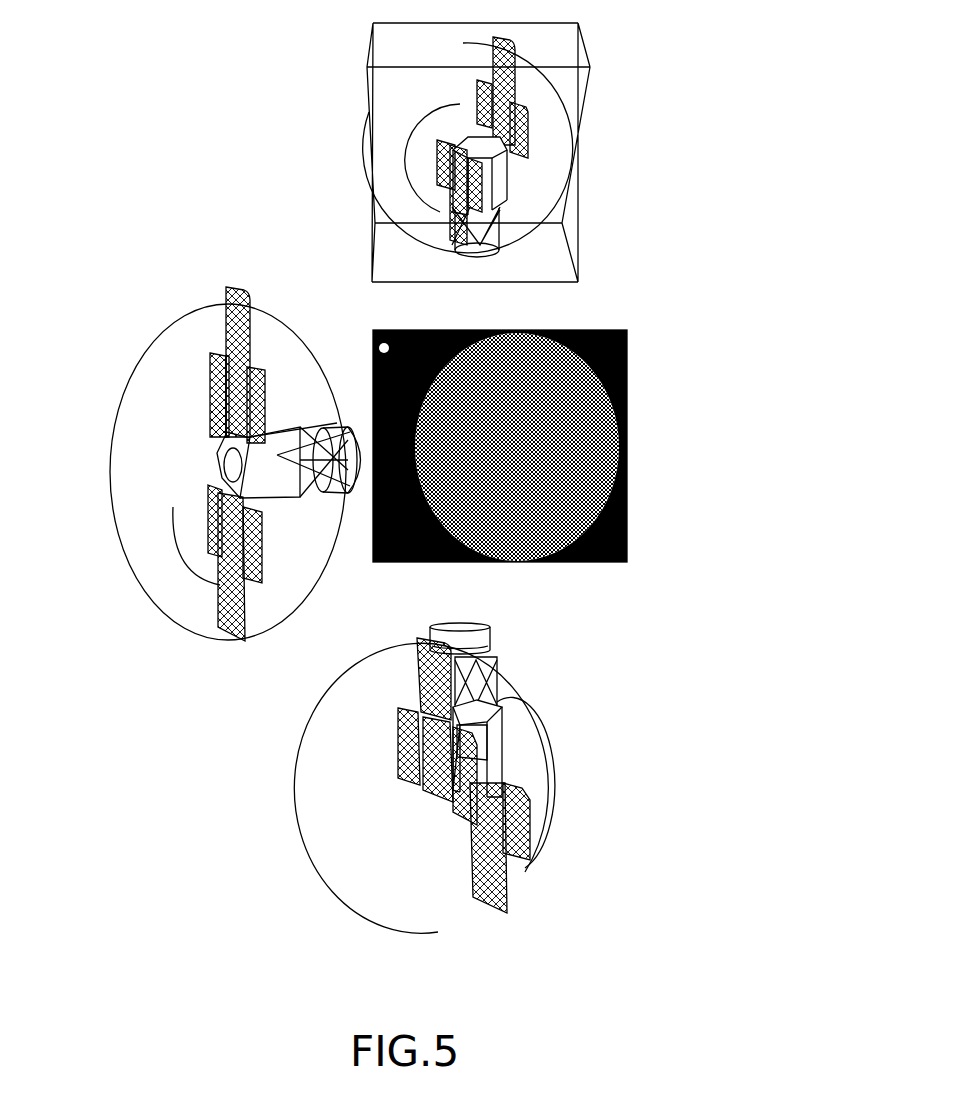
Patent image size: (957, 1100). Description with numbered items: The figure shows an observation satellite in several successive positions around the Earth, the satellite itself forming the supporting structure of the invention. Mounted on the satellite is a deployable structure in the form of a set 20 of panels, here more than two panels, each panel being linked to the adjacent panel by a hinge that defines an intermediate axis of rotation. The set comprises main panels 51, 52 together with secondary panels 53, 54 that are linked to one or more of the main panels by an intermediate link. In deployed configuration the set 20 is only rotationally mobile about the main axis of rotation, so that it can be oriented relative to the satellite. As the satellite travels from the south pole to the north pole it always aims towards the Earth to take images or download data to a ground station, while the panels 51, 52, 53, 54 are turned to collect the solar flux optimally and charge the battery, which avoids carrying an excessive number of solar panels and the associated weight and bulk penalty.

The set of panels 20 is at (536, 881).
The main panel 51 is at (233, 373).
The main panel 52 is at (232, 286).
The secondary panel 53 is at (207, 385).
The secondary panel 54 is at (212, 412).